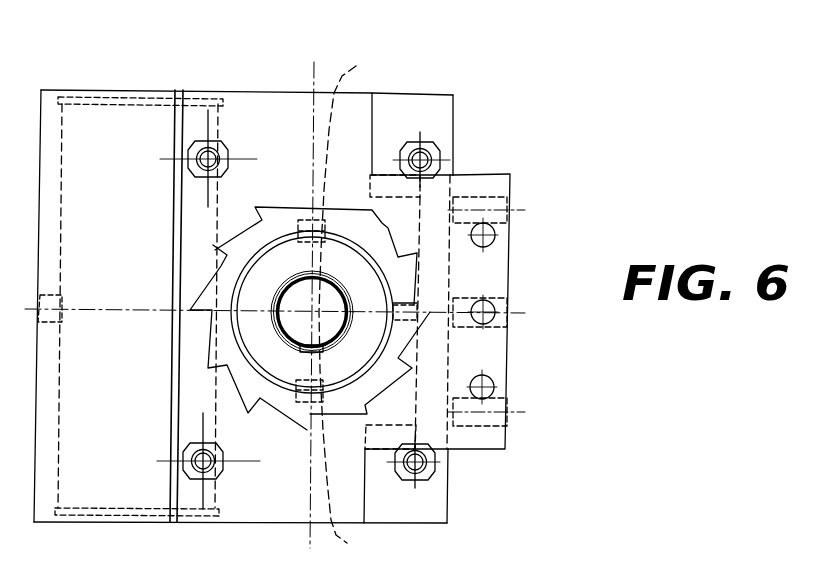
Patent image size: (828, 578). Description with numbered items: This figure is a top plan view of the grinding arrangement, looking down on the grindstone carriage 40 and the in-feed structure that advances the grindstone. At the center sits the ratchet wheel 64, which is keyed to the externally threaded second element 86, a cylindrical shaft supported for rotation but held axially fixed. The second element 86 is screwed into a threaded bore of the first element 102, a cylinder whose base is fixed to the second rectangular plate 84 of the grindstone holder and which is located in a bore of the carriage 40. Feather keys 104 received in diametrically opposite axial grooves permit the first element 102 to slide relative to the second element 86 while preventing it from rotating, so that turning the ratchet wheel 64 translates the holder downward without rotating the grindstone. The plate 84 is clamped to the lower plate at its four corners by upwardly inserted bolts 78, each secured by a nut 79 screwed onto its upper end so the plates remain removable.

The carriage 40 is at (275, 100).
The second rectangular plate 84 is at (425, 93).
The feather keys 104 is at (362, 308).
The ratchet wheel 64 is at (237, 243).
The second element 86 is at (285, 322).
The first element 102 is at (370, 333).
The nut 79 is at (200, 148).
The bolt 78 is at (197, 167).